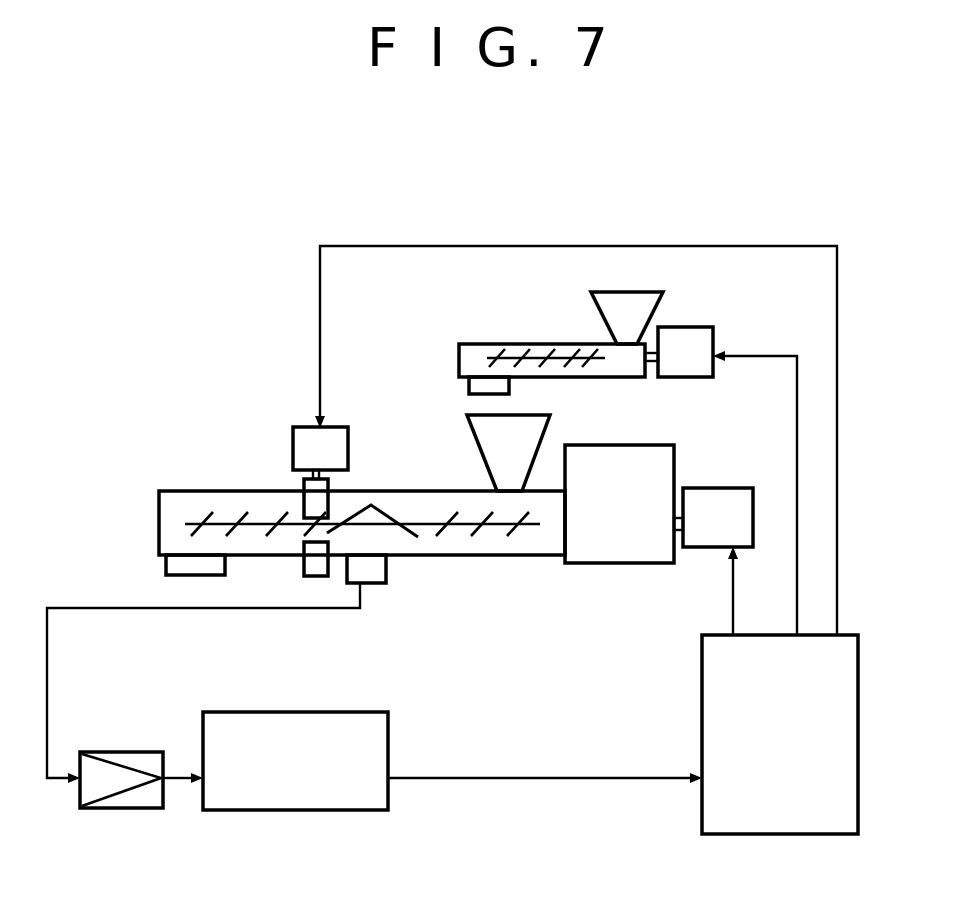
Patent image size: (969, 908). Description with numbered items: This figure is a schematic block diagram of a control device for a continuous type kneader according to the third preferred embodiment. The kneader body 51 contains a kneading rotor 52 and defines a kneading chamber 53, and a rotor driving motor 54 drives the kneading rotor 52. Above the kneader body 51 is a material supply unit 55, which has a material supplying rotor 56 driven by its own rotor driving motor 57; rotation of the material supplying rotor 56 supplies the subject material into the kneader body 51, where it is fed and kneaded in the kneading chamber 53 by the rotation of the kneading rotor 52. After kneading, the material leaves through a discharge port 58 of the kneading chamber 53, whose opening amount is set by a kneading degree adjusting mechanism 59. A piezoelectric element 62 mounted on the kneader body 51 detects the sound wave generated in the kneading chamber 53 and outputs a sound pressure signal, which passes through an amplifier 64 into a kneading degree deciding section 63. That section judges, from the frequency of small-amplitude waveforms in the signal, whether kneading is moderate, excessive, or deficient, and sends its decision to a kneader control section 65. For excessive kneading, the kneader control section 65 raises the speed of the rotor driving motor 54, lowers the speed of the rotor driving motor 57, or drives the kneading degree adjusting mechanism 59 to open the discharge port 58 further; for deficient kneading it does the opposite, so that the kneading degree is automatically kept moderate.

The kneader body 51 is at (484, 566).
The kneading rotor 52 is at (435, 520).
The kneading chamber 53 is at (388, 532).
The rotor driving motor 54 is at (733, 497).
The material supply unit 55 is at (676, 289).
The material supplying rotor 56 is at (538, 355).
The rotor driving motor 57 is at (713, 332).
The discharge port 58 is at (303, 520).
The kneading degree adjusting mechanism 59 is at (335, 437).
The piezoelectric element 62 is at (377, 583).
The kneading degree deciding section 63 is at (338, 810).
The amplifier 64 is at (127, 808).
The kneader control section 65 is at (775, 834).